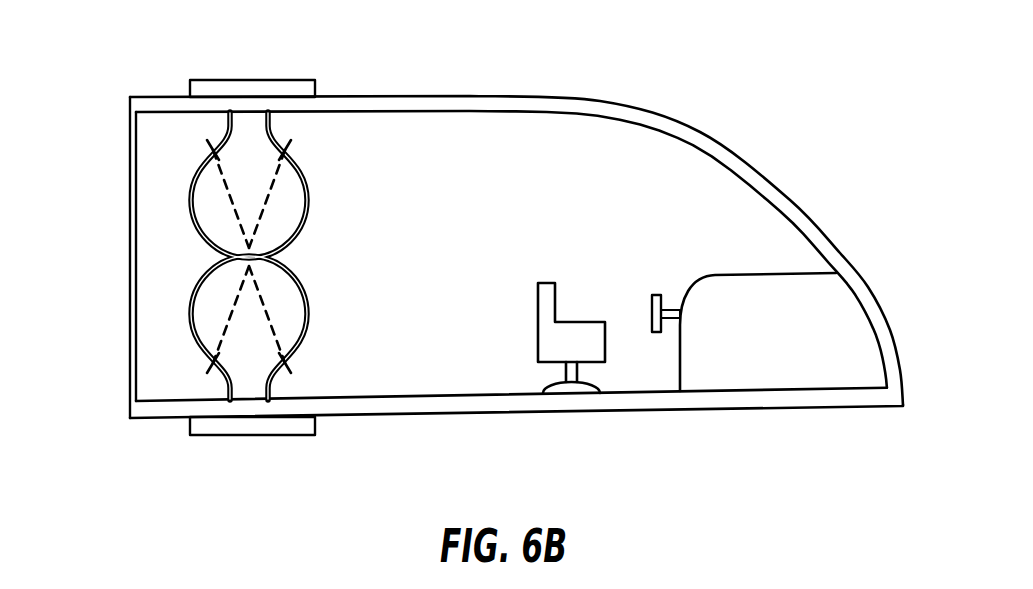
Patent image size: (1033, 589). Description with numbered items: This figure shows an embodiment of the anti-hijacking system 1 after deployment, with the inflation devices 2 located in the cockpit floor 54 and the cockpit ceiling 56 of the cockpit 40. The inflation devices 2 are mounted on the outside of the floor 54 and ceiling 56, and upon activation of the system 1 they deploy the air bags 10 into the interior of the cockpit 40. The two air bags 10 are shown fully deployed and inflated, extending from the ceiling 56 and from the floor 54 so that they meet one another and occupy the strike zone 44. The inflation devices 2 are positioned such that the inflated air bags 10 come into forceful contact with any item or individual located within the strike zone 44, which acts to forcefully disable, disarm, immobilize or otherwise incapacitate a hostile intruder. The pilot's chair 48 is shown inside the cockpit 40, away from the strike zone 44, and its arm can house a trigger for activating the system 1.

The anti-hijacking system 1 is at (800, 100).
The inflation devices 2 is at (208, 80).
The air bags 10 is at (270, 179).
The cockpit 40 is at (723, 242).
The strike zone 44 is at (308, 146).
The pilot's chair 48 is at (570, 320).
The cockpit floor 54 is at (468, 414).
The cockpit ceiling 56 is at (588, 96).